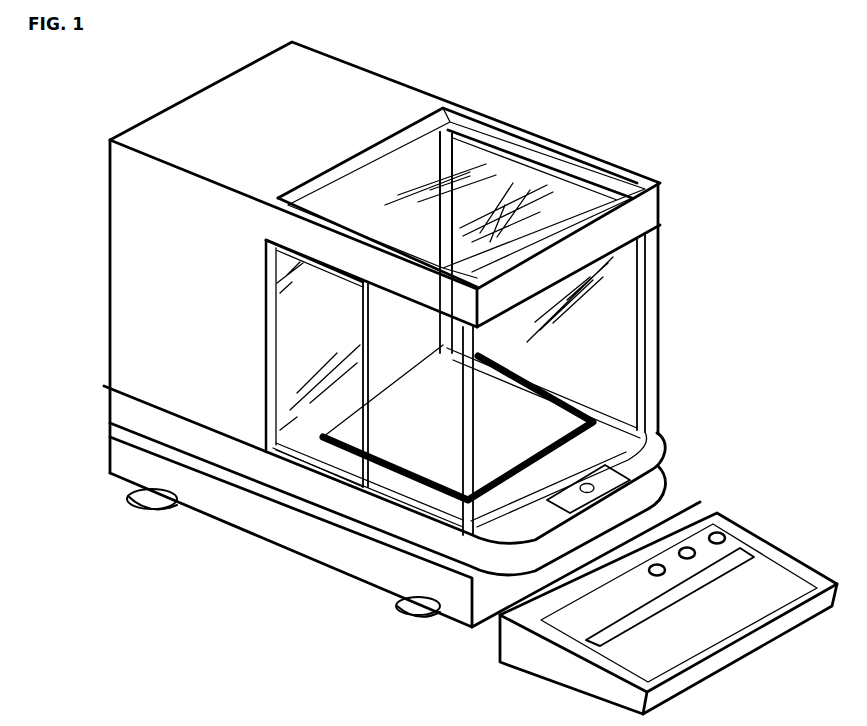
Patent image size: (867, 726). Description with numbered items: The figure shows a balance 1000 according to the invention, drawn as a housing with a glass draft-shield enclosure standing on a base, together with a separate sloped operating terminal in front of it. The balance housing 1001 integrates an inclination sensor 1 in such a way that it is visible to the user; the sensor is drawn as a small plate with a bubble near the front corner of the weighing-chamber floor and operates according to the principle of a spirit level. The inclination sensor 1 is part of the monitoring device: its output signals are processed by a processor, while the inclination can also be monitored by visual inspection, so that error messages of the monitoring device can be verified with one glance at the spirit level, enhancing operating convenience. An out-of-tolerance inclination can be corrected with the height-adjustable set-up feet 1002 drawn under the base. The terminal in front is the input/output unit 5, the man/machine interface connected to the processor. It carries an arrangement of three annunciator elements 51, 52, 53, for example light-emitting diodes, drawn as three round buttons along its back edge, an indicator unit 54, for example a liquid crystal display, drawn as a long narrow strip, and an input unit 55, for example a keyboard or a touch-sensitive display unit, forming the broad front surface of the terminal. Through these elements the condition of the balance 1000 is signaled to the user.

The balance 1000 is at (573, 117).
The balance housing 1001 is at (383, 92).
The height-adjustable set-up feet 1002 is at (132, 512).
The inclination sensor 1 is at (605, 470).
The input/output unit 5 is at (743, 518).
The annunciator element 51 is at (658, 565).
The annunciator element 52 is at (686, 548).
The annunciator element 53 is at (716, 533).
The indicator unit 54 is at (737, 560).
The input unit 55 is at (768, 583).